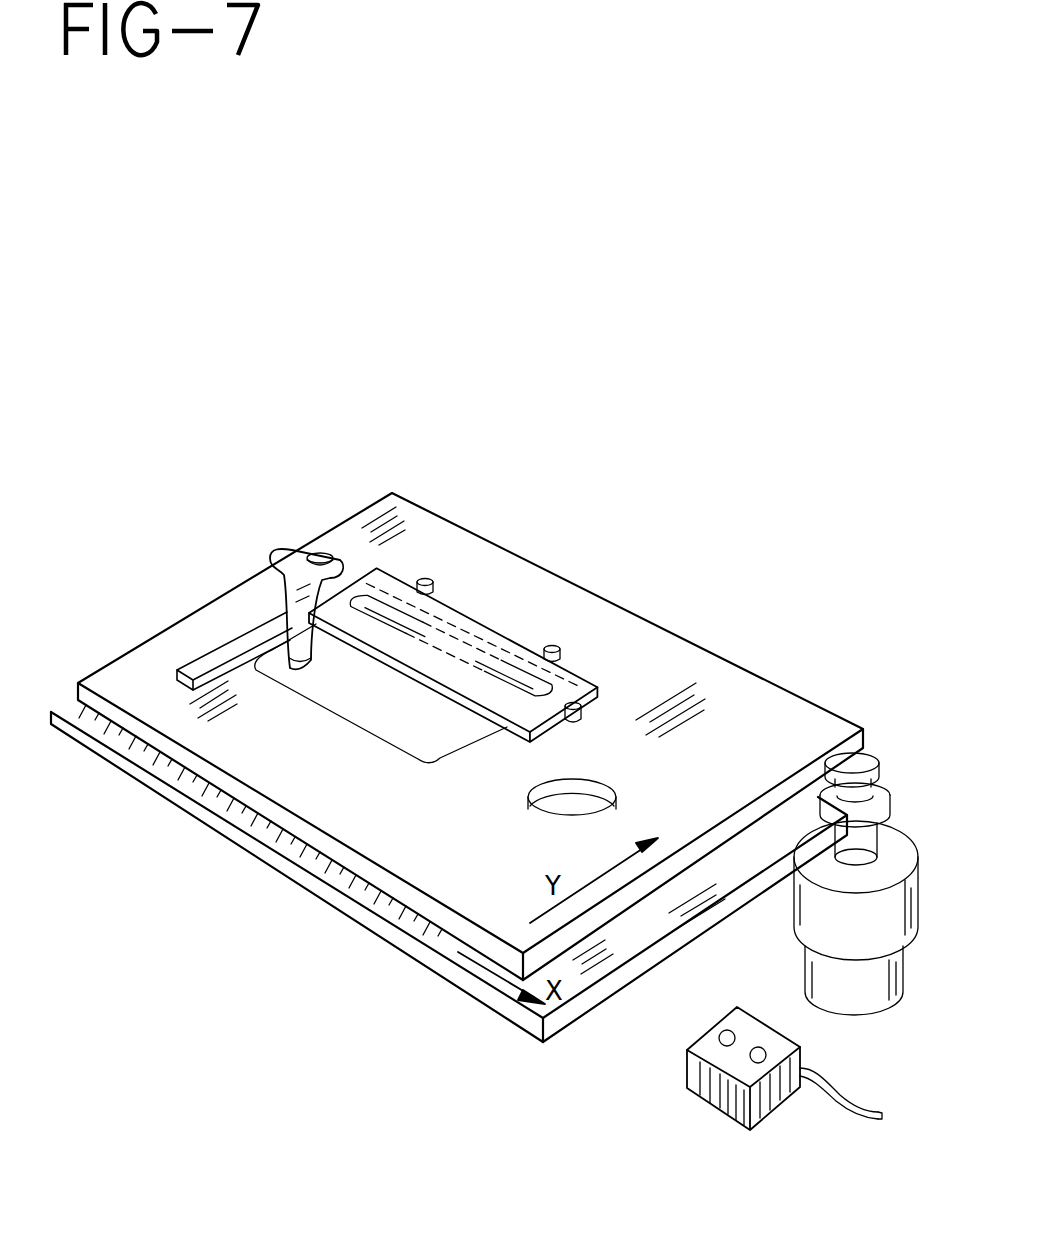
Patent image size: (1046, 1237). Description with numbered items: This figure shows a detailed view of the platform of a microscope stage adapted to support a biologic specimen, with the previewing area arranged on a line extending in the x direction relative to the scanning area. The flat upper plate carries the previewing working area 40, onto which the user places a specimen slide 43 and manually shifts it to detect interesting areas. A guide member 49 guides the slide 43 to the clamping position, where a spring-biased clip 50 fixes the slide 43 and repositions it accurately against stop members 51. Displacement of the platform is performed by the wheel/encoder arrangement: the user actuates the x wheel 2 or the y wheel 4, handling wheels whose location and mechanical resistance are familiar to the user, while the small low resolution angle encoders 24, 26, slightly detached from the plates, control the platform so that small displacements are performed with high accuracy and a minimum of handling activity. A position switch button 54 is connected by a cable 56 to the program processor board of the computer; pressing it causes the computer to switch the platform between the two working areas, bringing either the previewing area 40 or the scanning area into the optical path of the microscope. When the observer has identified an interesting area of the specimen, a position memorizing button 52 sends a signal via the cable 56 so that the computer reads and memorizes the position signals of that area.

The x wheel 2 is at (870, 993).
The y wheel 4 is at (812, 916).
The angle encoder 24 is at (887, 795).
The angle encoder 26 is at (852, 762).
The working area 40 is at (563, 810).
The specimen slide 43 is at (403, 667).
The guide member 49 is at (228, 650).
The clip 50 is at (283, 553).
The stop members 51 is at (427, 580).
The position memorizing button 52 is at (719, 1038).
The position switch button 54 is at (750, 1058).
The cable 56 is at (834, 1108).